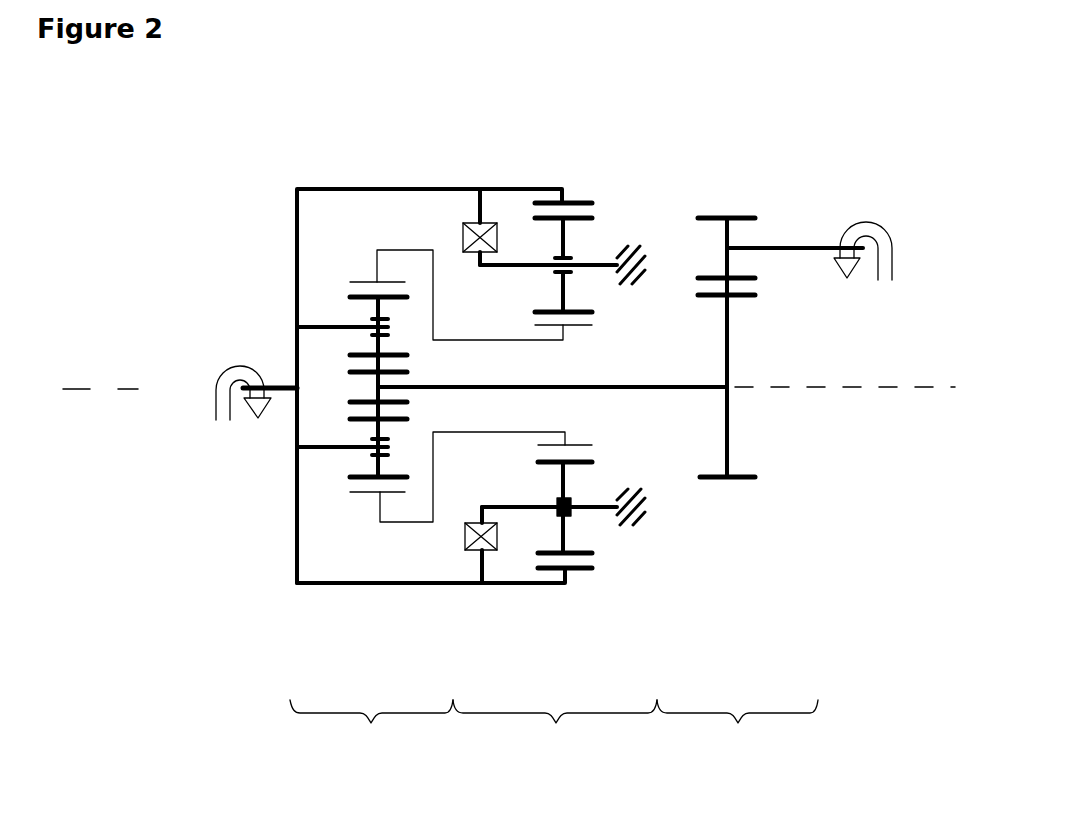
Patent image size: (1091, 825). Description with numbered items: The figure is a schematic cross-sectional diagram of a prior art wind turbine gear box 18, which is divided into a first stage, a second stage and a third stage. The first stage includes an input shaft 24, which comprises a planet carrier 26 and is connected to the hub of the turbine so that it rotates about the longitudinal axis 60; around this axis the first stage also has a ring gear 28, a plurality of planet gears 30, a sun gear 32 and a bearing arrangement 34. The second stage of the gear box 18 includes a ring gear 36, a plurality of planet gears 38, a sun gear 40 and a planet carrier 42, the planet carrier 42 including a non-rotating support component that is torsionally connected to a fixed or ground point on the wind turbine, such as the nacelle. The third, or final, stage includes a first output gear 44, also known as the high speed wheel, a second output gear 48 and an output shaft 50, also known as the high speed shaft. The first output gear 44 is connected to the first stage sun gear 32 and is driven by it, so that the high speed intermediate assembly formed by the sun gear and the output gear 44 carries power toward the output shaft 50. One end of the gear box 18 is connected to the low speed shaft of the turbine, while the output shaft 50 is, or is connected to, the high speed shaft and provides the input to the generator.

The gear box 18 is at (858, 98).
The input shaft 24 is at (201, 386).
The planet carrier 26 is at (296, 226).
The ring gear 28 is at (356, 282).
The planet gears 30 is at (415, 343).
The sun gear 32 is at (362, 387).
The bearing arrangement 34 is at (462, 215).
The ring gear 36 is at (590, 200).
The planet gears 38 is at (575, 282).
The sun gear 40 is at (577, 325).
The planet carrier 42 is at (645, 492).
The first output gear 44 is at (733, 433).
The second output gear 48 is at (730, 215).
The output shaft 50 is at (825, 245).
The longitudinal axis 60 is at (83, 386).